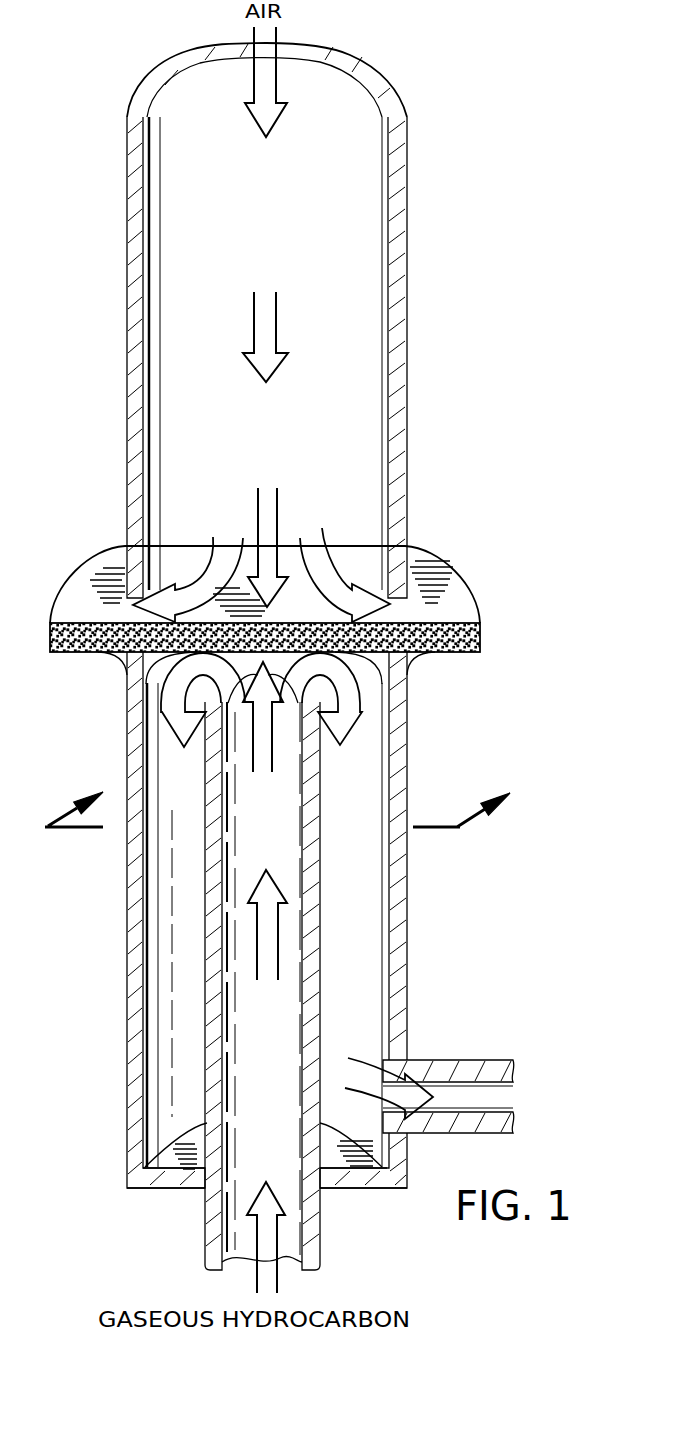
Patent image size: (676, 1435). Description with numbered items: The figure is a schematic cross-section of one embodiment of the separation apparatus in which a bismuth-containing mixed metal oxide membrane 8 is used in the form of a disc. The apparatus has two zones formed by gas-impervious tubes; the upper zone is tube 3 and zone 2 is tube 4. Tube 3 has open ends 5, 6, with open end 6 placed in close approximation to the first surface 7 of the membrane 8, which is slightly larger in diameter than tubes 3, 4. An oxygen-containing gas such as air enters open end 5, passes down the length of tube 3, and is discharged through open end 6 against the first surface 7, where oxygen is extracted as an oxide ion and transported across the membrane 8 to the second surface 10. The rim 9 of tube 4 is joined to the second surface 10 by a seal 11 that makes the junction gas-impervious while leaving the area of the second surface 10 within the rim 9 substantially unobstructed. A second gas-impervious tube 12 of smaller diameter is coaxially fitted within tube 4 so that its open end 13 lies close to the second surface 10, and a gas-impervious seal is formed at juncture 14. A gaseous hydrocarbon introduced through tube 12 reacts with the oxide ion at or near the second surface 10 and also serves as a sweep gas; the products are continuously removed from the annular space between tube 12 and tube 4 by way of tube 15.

The zone 2 is at (292, 792).
The gas-impervious tube 3 is at (406, 172).
The gas-impervious tube 4 is at (408, 1032).
The open end 5 is at (360, 60).
The open end 6 is at (357, 560).
The first surface 7 is at (457, 612).
The membrane 8 is at (480, 633).
The rim 9 is at (132, 682).
The second surface 10 is at (465, 653).
The seal 11 is at (125, 655).
The gas-impervious tube 12 is at (320, 988).
The open end 13 is at (280, 712).
The juncture 14 is at (207, 1193).
The tube 15 is at (455, 1098).